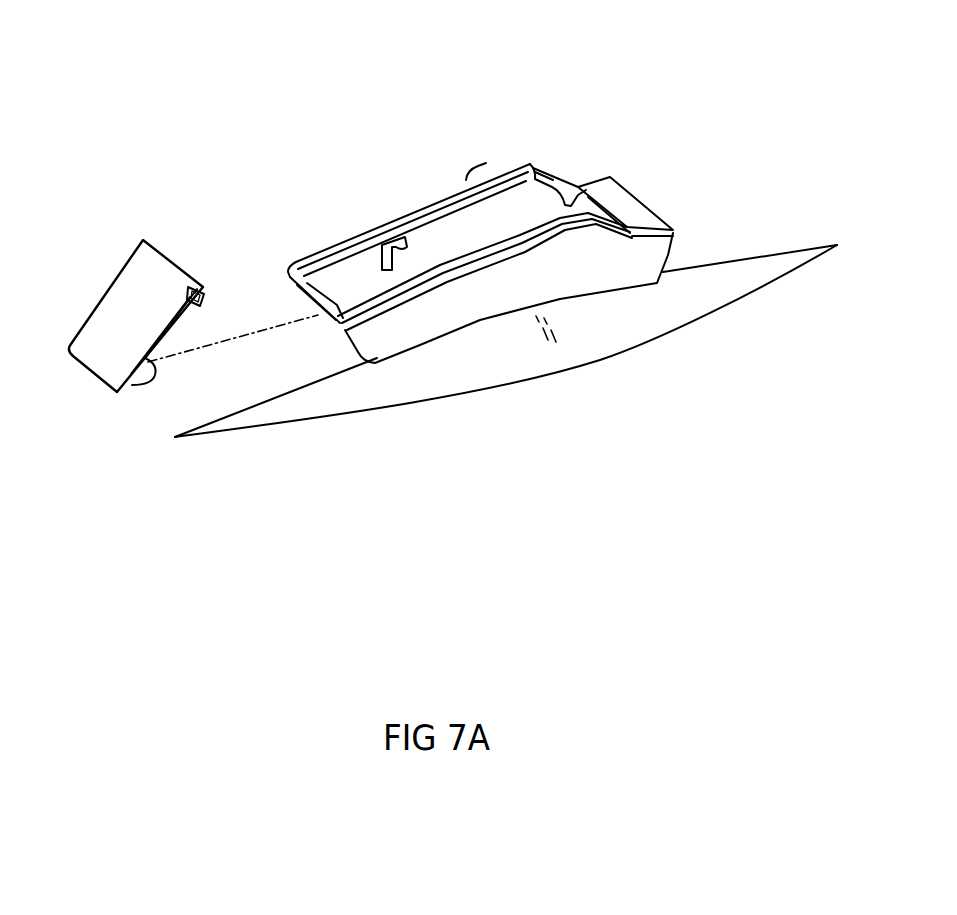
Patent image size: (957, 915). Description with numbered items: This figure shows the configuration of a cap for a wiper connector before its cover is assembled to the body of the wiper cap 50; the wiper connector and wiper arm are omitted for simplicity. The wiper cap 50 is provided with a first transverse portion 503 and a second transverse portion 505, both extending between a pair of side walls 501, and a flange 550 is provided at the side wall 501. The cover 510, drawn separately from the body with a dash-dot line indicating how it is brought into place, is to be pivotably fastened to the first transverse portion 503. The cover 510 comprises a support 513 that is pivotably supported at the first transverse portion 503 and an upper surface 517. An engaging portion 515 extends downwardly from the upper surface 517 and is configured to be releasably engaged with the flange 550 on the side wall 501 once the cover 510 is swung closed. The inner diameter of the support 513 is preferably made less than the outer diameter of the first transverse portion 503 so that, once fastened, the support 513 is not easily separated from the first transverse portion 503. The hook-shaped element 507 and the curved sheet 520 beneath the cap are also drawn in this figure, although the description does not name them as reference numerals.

The wiper cap 50 is at (563, 135).
The side wall 501 is at (655, 252).
The first transverse portion 503 is at (333, 293).
The second transverse portion 505 is at (630, 208).
The hook 507 is at (409, 253).
The cover 510 is at (134, 177).
The support 513 is at (139, 385).
The engaging portion 515 is at (203, 297).
The upper surface 517 is at (128, 273).
The curved panel 520 is at (640, 327).
The flange 550 is at (495, 252).